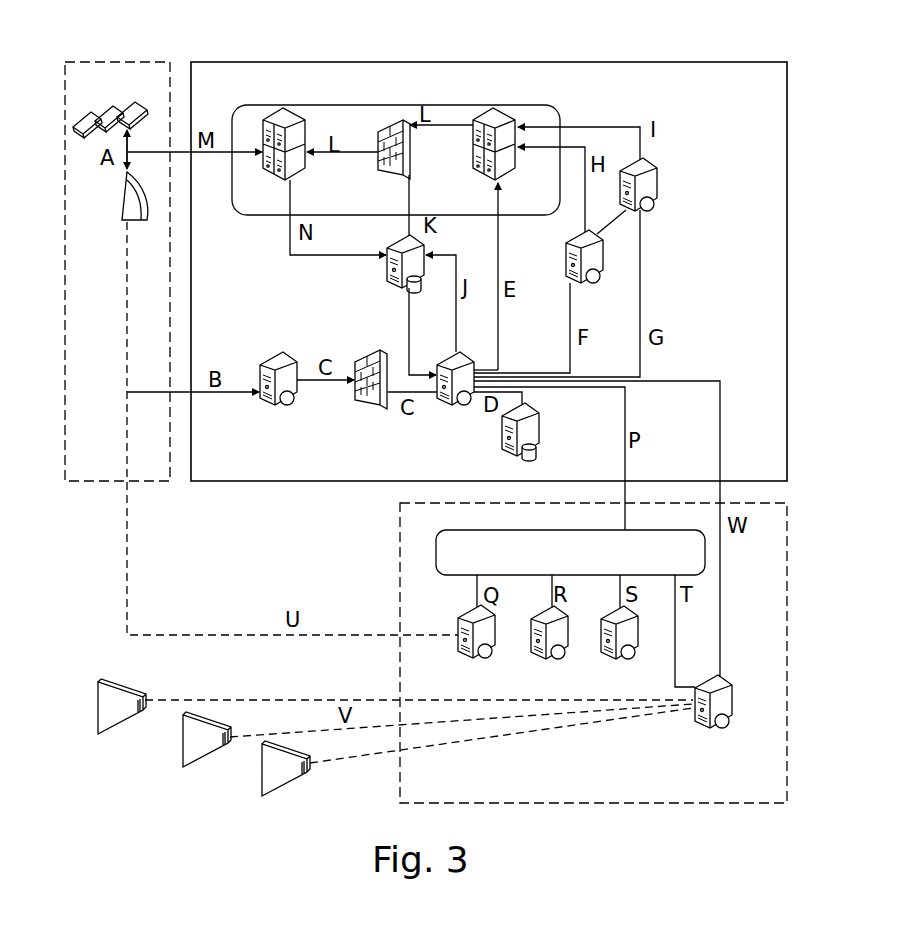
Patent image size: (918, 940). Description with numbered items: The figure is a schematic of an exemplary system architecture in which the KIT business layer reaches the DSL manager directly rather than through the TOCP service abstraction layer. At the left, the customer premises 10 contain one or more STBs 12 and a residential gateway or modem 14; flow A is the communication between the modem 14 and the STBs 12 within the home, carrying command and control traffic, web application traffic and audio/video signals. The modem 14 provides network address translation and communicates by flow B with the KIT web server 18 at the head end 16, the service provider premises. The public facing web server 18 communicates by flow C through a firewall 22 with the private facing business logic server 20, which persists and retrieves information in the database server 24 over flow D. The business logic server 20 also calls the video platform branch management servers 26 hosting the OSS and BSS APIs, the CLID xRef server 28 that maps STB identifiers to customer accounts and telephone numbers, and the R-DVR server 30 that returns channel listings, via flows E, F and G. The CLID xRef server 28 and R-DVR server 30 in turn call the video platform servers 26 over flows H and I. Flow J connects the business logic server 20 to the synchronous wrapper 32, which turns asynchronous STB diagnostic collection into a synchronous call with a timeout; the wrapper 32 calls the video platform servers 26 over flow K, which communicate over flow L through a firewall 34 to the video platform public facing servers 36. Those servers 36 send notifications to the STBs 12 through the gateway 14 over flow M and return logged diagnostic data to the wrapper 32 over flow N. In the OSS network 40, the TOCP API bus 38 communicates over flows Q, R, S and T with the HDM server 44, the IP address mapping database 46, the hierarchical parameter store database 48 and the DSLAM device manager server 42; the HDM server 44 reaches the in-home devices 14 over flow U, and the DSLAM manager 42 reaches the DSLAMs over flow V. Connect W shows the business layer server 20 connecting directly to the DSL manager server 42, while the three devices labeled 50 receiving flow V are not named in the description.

The customer premises 10 is at (145, 62).
The STB 12 is at (77, 118).
The residential gateway or modem 14 is at (124, 195).
The head end 16 is at (625, 62).
The KIT web server 18 is at (276, 357).
The private facing web server 20 is at (443, 404).
The firewall 22 is at (360, 396).
The database server 24 is at (541, 438).
The video platform branch management server 26 is at (510, 110).
The CLID xRef server 28 is at (604, 255).
The R-DVR server 30 is at (659, 190).
The synchronous wrapper 32 is at (389, 246).
The firewall 34 is at (388, 121).
The video platform public facing server 36 is at (297, 107).
The TOCP API bus 38 is at (665, 530).
The OSS network 40 is at (787, 532).
The DSLAM device manager server 42 is at (730, 675).
The HDM server 44 is at (466, 613).
The database 46 is at (569, 650).
The database 48 is at (639, 632).
The projector 50 is at (118, 733).